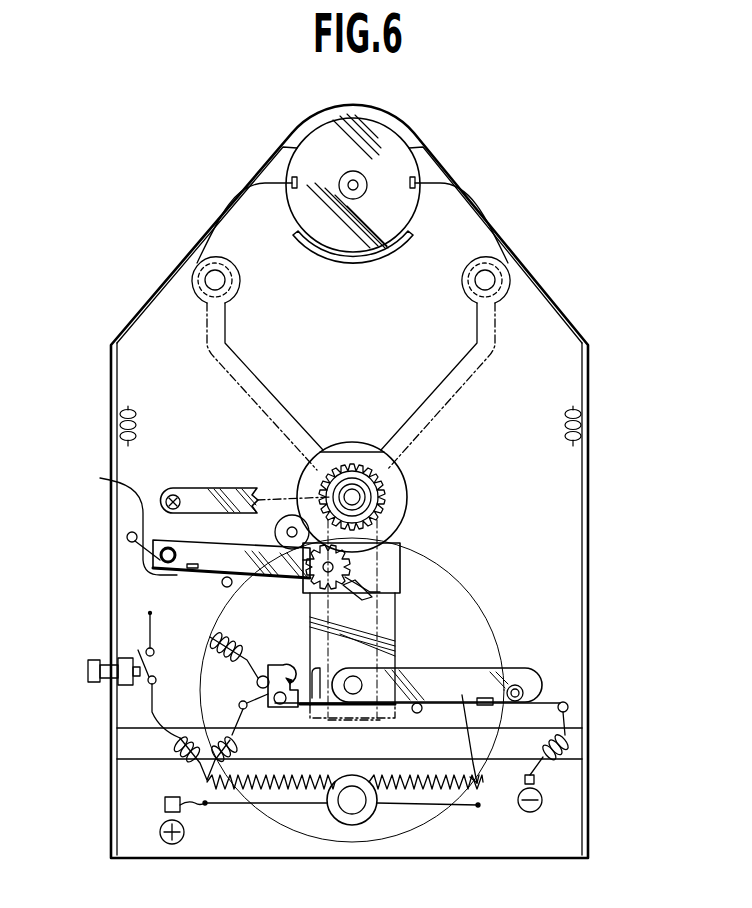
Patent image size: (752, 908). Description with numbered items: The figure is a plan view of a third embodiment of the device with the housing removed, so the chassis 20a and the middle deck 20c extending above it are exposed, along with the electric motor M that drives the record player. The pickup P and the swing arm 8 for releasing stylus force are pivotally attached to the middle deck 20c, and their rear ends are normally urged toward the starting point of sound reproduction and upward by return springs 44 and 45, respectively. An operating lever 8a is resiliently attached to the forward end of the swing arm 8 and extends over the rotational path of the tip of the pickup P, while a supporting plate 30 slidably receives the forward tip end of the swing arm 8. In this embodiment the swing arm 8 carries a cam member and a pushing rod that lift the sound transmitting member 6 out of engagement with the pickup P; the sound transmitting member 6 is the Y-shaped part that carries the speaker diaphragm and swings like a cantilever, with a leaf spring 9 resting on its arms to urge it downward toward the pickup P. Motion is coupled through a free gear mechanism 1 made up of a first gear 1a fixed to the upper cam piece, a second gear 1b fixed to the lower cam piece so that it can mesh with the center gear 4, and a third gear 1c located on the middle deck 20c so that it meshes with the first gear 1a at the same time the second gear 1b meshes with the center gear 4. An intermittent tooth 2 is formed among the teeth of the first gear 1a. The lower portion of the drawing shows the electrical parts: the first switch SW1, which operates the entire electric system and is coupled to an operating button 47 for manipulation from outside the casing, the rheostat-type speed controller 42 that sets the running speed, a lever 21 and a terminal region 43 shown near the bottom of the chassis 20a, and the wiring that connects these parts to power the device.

The motor M is at (393, 140).
The chassis 20a is at (590, 345).
The middle deck 20c is at (533, 322).
The center gear 4 is at (383, 512).
The leaf spring 9 is at (212, 488).
The third gear 1c is at (277, 530).
The swing arm 8 is at (210, 640).
The return spring 45 is at (124, 518).
The supporting plate 30 is at (400, 576).
The free gear mechanism 1 is at (362, 560).
The first gear 1a is at (350, 562).
The second gear 1b is at (346, 578).
The operating lever 8a is at (363, 596).
The intermittent tooth 2 is at (305, 573).
The return spring 44 is at (553, 698).
The sound transmitting member 6 is at (380, 721).
The latch lever 21 is at (312, 700).
The operating button 47 is at (88, 668).
The first switch SW1 is at (143, 677).
The speed controller 42 is at (402, 806).
The pickup P is at (473, 697).
The terminal compartment 43 is at (588, 792).